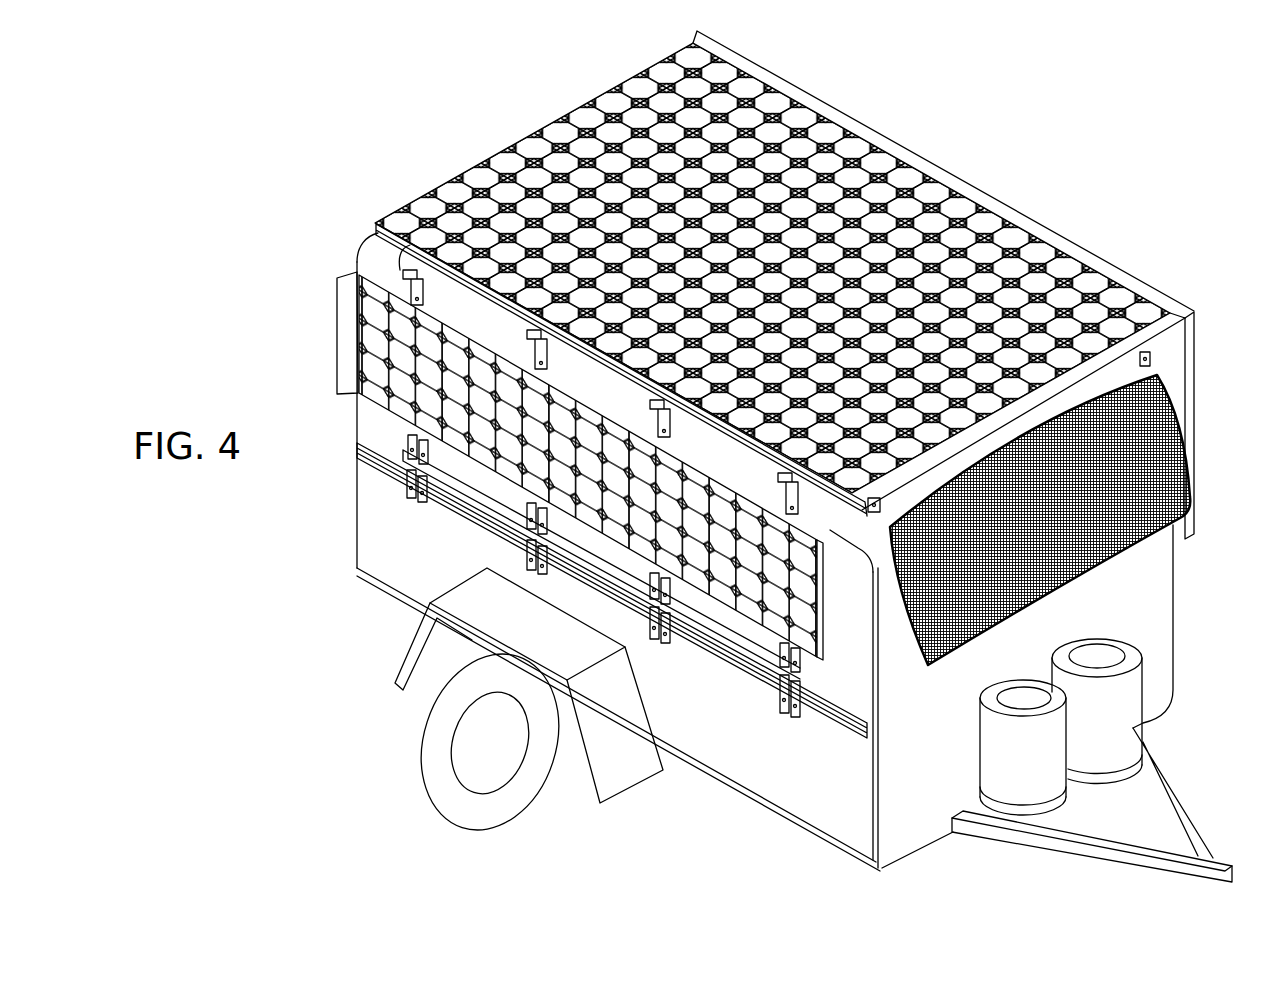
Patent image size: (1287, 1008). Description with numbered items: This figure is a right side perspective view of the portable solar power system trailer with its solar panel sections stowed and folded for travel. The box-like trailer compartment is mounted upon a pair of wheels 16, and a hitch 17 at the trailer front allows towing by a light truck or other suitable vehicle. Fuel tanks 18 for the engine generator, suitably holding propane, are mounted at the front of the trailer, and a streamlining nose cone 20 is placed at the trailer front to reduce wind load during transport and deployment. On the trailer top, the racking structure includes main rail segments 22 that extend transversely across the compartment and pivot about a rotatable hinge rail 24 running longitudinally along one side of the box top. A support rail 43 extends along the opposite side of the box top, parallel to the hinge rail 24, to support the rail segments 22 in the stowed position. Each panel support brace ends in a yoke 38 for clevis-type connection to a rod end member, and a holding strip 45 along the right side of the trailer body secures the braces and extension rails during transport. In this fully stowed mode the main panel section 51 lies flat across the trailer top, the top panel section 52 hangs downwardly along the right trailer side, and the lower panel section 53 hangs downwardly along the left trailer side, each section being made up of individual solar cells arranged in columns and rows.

The wheels 16 is at (541, 797).
The hitch 17 is at (1085, 848).
The tanks 18 is at (1130, 742).
The streamlining nose cone 20 is at (1153, 540).
The main rail segments 22 is at (365, 247).
The rotatable hinge rail 24 is at (1147, 355).
The yoke 38 is at (778, 700).
The support rail 43 is at (884, 502).
The holding strip 45 is at (832, 720).
The main panel section 51 is at (551, 135).
The top panel section 52 is at (336, 318).
The lower panel section 53 is at (1188, 410).